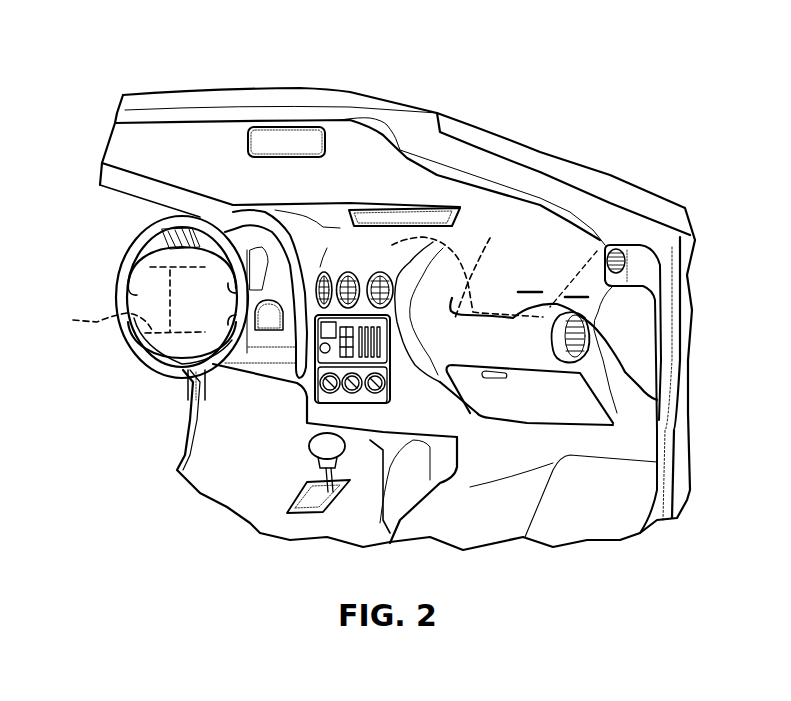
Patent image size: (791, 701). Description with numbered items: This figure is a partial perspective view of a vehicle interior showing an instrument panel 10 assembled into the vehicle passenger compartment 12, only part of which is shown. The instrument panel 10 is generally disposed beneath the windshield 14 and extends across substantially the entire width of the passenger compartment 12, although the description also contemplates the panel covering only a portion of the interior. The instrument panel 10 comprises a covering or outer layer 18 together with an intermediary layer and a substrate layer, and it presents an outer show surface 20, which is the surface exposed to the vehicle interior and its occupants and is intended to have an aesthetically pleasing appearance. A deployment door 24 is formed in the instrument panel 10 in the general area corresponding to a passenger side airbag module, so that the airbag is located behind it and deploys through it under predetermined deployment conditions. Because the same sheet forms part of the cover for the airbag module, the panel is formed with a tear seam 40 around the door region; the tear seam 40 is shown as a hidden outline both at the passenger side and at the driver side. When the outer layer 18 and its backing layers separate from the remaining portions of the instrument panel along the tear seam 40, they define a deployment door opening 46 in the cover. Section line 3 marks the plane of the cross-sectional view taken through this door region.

The instrument panel 10 is at (484, 224).
The vehicle passenger compartment 12 is at (152, 415).
The windshield 14 is at (343, 145).
The outer layer 18 is at (457, 240).
The outer show surface 20 is at (497, 352).
The deployment door 24 is at (527, 280).
The section line 3- 3 is at (532, 291).
The tear seam 40 is at (391, 244).
The deployment door opening 46 is at (650, 403).